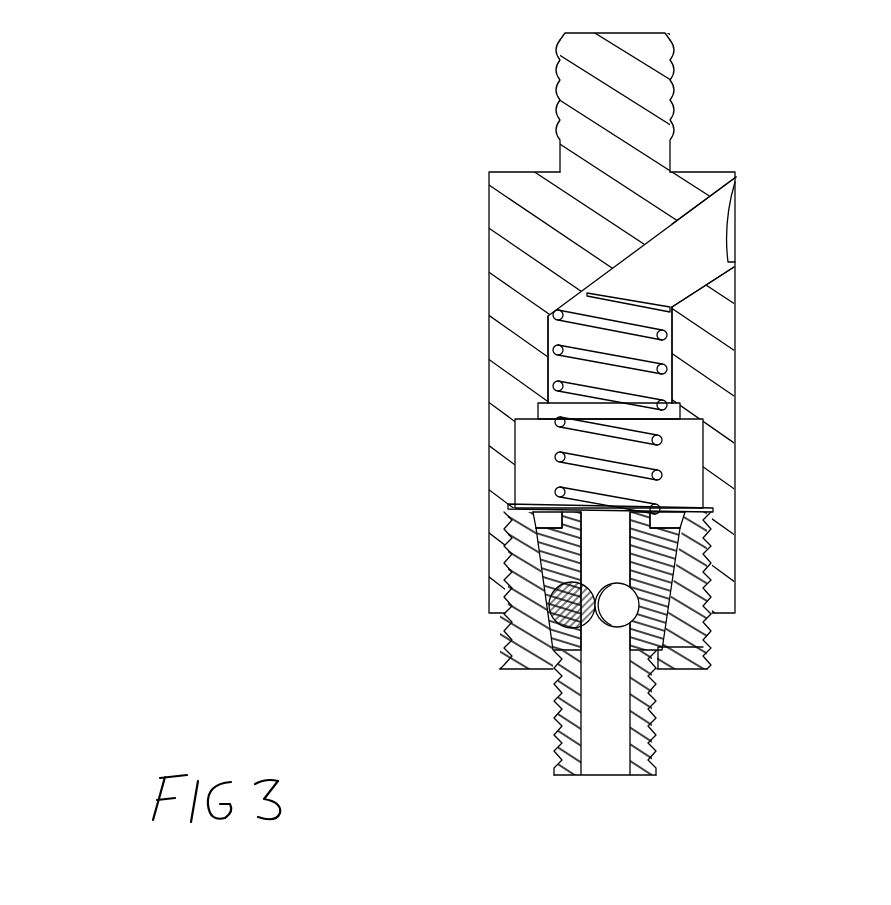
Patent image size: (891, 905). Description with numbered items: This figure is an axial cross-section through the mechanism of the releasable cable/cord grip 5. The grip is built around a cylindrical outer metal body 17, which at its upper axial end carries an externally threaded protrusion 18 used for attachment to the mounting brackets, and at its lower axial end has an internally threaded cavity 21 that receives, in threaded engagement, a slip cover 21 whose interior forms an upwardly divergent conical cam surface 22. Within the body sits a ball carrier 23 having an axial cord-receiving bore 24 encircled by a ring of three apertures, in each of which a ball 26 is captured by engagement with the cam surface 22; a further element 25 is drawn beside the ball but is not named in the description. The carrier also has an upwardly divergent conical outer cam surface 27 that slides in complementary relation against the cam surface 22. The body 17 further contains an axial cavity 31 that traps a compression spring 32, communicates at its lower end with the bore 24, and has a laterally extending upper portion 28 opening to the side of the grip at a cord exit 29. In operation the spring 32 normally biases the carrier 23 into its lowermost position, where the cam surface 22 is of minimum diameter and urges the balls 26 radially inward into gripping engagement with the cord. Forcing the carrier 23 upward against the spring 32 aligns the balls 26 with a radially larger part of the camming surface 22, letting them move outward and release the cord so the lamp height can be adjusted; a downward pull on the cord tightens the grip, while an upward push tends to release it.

The cable/cord grip 5 is at (727, 413).
The cylindrical outer metal body 17 is at (727, 494).
The externally threaded protrusion 18 is at (662, 98).
The slip cover 21 is at (665, 628).
The conical cam surface 22 is at (660, 648).
The ball carrier 23 is at (540, 546).
The cord-receiving bore 24 is at (595, 718).
The ball 25 is at (605, 637).
The ball 26 is at (555, 604).
The outer cam surface 27 is at (548, 556).
The laterally extending upper portion 28 is at (668, 284).
The cord exit 29 is at (728, 234).
The axial cavity 31 is at (672, 356).
The compression spring 32 is at (578, 353).